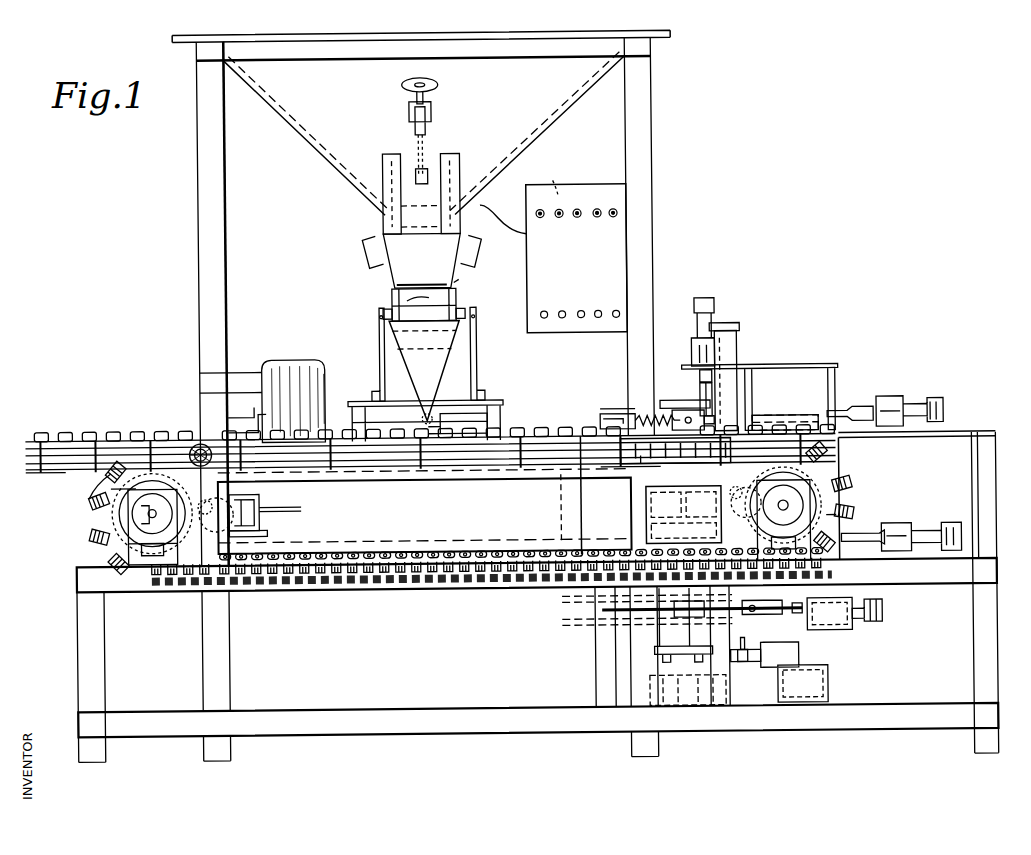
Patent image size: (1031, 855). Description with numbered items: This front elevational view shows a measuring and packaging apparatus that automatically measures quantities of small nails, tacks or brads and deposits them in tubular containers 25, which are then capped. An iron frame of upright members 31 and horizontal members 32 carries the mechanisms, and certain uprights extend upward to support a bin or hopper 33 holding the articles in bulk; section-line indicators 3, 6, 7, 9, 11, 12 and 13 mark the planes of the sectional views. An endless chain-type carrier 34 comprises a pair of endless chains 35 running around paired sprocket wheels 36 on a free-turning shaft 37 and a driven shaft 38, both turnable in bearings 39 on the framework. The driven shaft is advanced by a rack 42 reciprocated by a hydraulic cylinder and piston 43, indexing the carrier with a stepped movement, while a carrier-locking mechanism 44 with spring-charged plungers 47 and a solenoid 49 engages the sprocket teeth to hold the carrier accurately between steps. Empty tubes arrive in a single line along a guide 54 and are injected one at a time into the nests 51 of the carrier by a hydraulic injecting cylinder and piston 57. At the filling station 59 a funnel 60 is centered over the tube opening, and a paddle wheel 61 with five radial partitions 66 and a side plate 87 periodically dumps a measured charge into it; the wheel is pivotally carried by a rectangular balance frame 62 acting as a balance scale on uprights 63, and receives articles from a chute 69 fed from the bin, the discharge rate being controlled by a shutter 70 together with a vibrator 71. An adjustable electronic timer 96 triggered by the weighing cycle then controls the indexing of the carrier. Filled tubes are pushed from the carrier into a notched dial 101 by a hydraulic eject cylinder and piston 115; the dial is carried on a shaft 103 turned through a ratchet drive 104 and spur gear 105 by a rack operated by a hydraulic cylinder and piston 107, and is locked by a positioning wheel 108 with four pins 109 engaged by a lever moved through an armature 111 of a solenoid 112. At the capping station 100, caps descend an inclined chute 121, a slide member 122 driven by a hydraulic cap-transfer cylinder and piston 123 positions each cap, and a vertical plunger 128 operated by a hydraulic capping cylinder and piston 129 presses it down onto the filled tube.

The section line 3- 3 is at (535, 398).
The section line 6- 6 is at (112, 416).
The section line 7- 7 is at (150, 530).
The section line 9- 9 is at (652, 643).
The section line 11- 11 is at (743, 482).
The section line 12- 12 is at (720, 492).
The section line 13- 13 is at (480, 258).
The tubular container 25 is at (85, 435).
The upright members 31 is at (200, 47).
The horizontal members 32 is at (943, 437).
The bin or hopper 33 is at (330, 158).
The endless chain-type carrier 34 is at (440, 545).
The endless chains 35 is at (112, 487).
The paired sprocket wheels 36 is at (118, 518).
The shaft 37 is at (122, 518).
The shaft 38 is at (503, 485).
The bearings 39 is at (158, 532).
The rack 42 is at (722, 537).
The hydraulic cylinder and piston 43 is at (940, 540).
The carrier-locking mechanism 44 is at (260, 497).
The spring-charged plungers 47 is at (255, 534).
The solenoid 49 is at (244, 509).
The nests 51 is at (80, 499).
The guide 54 is at (40, 470).
The hydraulic injecting cylinder and piston 57 is at (197, 440).
The filling or loading station 59 is at (445, 405).
The funnel 60 is at (412, 360).
The paddle wheel 61 is at (395, 292).
The rectangular balance frame 62 is at (387, 307).
The uprights 63 is at (380, 329).
The radial partitions 66 is at (419, 297).
The chute 69 is at (430, 278).
The shutter 70 is at (432, 185).
The vibrator 71 is at (526, 172).
The side plate 87 is at (468, 279).
The adjustable electronic timer 96 is at (620, 262).
The capping station 100 is at (672, 410).
The notched dial 101 is at (630, 415).
The shaft 103 is at (650, 630).
The ratchet drive 104 is at (623, 582).
The spur gear 105 is at (655, 613).
The hydraulic cylinder and piston 107 is at (853, 618).
The positioning wheel 108 is at (662, 670).
The pins 109 is at (660, 665).
The armature 111 is at (742, 670).
The solenoid 112 is at (780, 655).
The hydraulic eject cylinder and piston 115 is at (640, 470).
The inclined chute 121 is at (732, 347).
The slide member or plunger 122 is at (788, 418).
The hydraulic cap-transfer cylinder and piston 123 is at (917, 412).
The vertical plunger 128 is at (702, 399).
The hydraulic capping cylinder and piston 129 is at (715, 304).